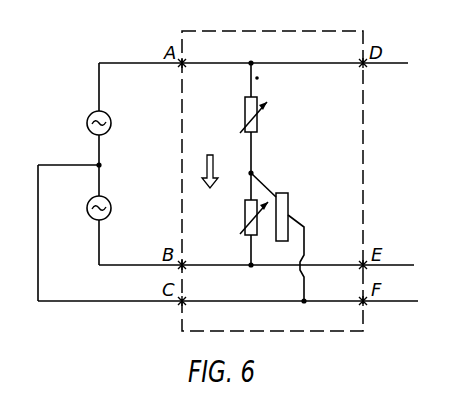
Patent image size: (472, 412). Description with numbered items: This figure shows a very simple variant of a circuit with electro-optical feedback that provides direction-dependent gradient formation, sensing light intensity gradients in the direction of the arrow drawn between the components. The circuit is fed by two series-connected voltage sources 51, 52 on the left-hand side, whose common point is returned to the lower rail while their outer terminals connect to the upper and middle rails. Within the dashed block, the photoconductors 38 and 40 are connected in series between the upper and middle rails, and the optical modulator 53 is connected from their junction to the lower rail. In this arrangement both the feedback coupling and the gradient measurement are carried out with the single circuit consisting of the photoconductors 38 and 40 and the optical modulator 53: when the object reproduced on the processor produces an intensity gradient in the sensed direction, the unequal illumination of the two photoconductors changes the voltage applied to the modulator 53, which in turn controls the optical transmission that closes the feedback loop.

The photo-conductor 38 is at (244, 109).
The photo-conductor 40 is at (243, 217).
The voltage source 51 is at (110, 116).
The voltage source 52 is at (110, 201).
The optical modulator 53 is at (290, 203).